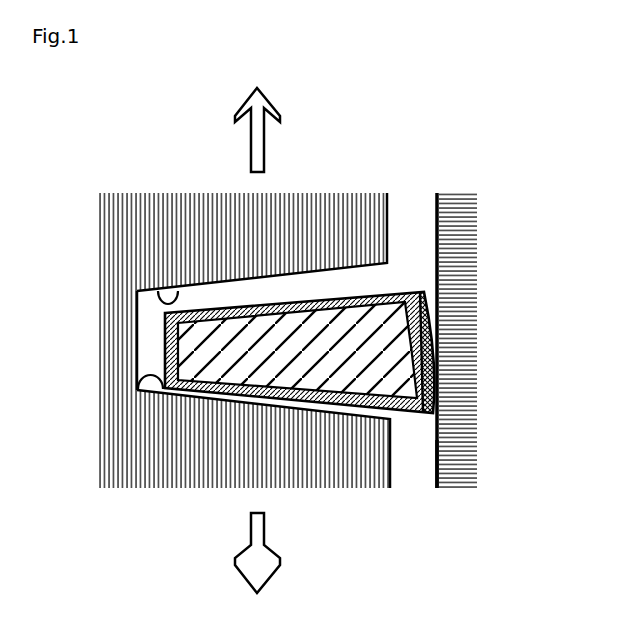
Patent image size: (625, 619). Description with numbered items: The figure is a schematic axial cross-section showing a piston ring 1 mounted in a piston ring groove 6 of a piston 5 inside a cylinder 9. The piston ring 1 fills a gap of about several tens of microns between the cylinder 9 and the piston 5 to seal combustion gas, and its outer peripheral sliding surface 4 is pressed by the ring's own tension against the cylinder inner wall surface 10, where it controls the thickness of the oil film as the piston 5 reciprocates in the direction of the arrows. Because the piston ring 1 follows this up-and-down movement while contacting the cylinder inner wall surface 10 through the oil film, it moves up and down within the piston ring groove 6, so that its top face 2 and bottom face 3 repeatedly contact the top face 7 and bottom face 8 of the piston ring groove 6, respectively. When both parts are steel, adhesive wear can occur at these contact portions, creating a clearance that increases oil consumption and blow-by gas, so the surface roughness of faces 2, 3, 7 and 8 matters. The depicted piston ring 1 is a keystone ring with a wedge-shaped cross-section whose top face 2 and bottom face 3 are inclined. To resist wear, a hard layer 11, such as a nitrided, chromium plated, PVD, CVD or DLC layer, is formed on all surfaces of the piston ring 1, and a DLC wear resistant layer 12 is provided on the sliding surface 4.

The piston ring 1 is at (368, 243).
The top face of piston ring 2 is at (218, 313).
The bottom face of piston ring 3 is at (192, 392).
The sliding surface of piston ring 4 is at (440, 350).
The piston 5 is at (340, 470).
The piston ring groove 6 is at (147, 320).
The top face of piston ring groove 7 is at (178, 290).
The bottom face of piston ring groove 8 is at (137, 392).
The cylinder 9 is at (466, 443).
The cylinder inner wall surface 10 is at (437, 468).
The hard layer 11 is at (333, 297).
The wear resistant layer 12 is at (423, 291).